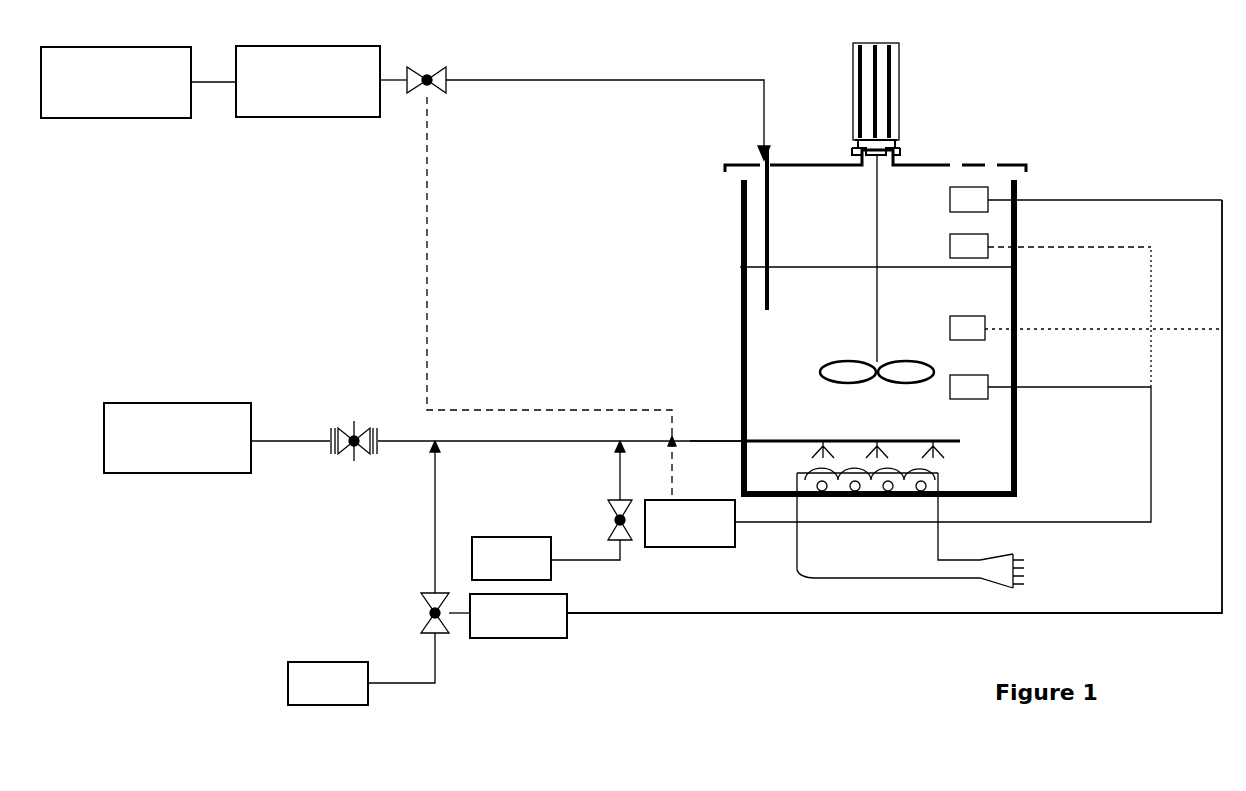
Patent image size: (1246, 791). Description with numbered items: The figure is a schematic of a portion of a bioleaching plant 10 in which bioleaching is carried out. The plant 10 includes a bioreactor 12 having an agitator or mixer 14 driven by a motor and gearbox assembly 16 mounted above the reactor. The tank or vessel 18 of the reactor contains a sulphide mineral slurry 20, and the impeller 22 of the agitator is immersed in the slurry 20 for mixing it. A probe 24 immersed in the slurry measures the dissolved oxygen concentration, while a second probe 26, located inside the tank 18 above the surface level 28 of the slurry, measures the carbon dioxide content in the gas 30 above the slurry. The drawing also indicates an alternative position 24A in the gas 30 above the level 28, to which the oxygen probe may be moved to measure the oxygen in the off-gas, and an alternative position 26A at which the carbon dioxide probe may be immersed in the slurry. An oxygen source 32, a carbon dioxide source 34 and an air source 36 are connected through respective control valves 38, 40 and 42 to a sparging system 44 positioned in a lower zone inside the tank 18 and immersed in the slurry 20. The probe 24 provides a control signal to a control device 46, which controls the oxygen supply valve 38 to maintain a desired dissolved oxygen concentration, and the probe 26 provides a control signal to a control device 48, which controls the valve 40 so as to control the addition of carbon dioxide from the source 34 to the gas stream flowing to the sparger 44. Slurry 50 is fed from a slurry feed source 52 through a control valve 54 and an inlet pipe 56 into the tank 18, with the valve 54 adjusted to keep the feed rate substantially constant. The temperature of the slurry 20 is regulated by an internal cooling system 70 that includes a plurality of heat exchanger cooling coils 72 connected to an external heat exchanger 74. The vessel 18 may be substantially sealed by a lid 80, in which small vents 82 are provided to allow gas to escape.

The bioleaching plant 10 is at (1110, 144).
The bioreactor 12 is at (652, 256).
The agitator 14 is at (918, 382).
The motor and gearbox assembly 16 is at (886, 43).
The tank 18 is at (1018, 484).
The sulphide mineral slurry 20 is at (936, 299).
The impeller 22 is at (838, 364).
The probe 24 is at (988, 375).
The probe position 24A is at (988, 234).
The second probe 26 is at (988, 187).
The probe position 26A is at (985, 316).
The surface level 28 is at (738, 239).
The gas 30 is at (826, 214).
The oxygen source 32 is at (545, 537).
The carbon dioxide source 34 is at (353, 662).
The air source 36 is at (237, 403).
The oxygen supply valve 38 is at (612, 500).
The control valve 40 is at (430, 593).
The control valve 42 is at (355, 425).
The sparging system 44 is at (877, 441).
The control device 46 is at (709, 548).
The control device 48 is at (546, 639).
The slurry 50 is at (352, 46).
The slurry feed source 52 is at (158, 47).
The control valve 54 is at (440, 67).
The inlet pipe 56 is at (735, 202).
The internal cooling system 70 is at (762, 477).
The heat exchanger cooling coils 72 is at (940, 480).
The external heat exchanger 74 is at (1036, 565).
The lid 80 is at (912, 165).
The vents 82 is at (990, 160).